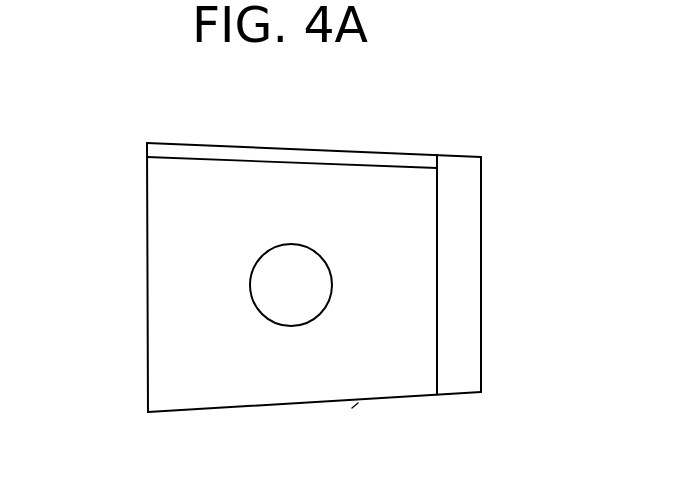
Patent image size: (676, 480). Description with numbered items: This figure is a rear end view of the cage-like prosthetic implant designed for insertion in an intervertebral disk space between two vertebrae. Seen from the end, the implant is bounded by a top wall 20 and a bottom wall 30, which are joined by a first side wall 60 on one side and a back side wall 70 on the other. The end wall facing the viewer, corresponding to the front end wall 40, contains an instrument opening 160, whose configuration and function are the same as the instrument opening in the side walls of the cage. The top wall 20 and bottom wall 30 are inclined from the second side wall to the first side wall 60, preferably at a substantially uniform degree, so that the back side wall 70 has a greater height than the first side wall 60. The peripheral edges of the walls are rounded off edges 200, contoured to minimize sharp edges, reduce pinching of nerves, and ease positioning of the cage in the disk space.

The top wall 20 is at (382, 152).
The bottom wall 30 is at (330, 400).
The front end wall 40 is at (417, 276).
The first side wall 60 is at (470, 302).
The back side wall 70 is at (147, 292).
The instrument opening 160 is at (306, 267).
The rounded off edges 200 is at (235, 155).